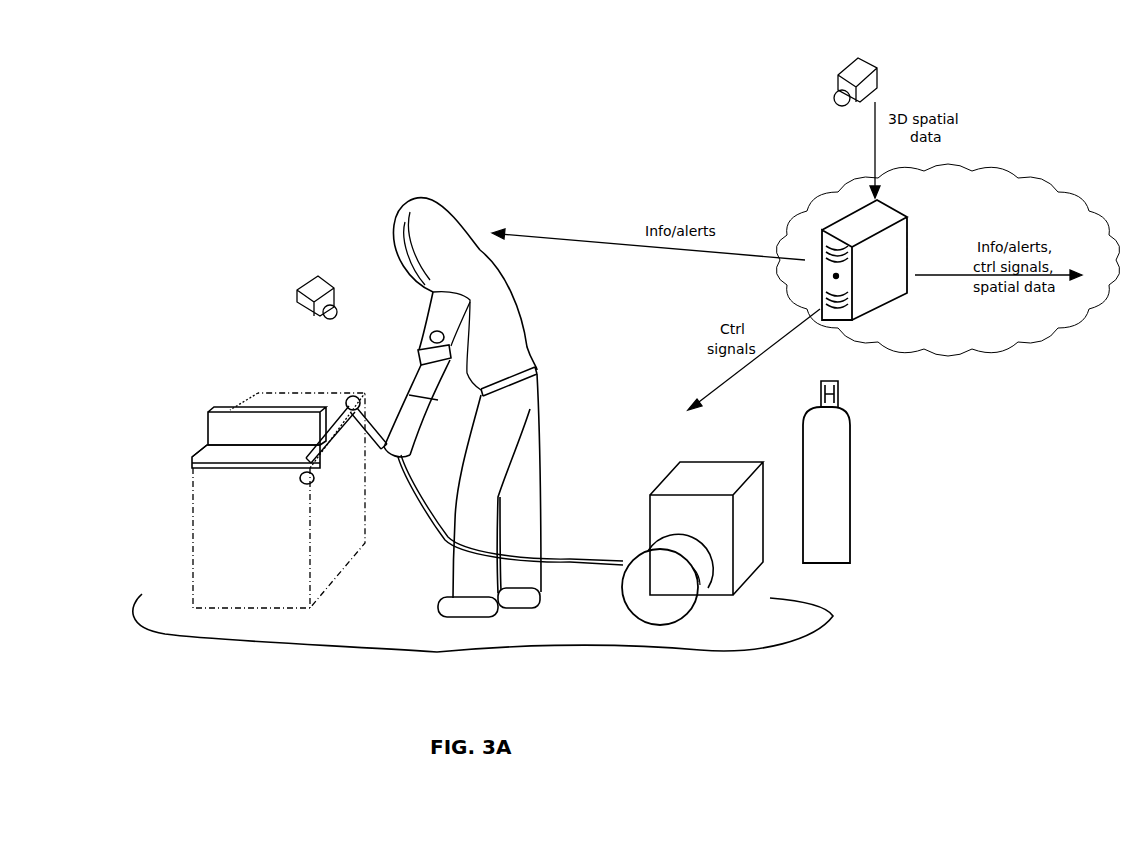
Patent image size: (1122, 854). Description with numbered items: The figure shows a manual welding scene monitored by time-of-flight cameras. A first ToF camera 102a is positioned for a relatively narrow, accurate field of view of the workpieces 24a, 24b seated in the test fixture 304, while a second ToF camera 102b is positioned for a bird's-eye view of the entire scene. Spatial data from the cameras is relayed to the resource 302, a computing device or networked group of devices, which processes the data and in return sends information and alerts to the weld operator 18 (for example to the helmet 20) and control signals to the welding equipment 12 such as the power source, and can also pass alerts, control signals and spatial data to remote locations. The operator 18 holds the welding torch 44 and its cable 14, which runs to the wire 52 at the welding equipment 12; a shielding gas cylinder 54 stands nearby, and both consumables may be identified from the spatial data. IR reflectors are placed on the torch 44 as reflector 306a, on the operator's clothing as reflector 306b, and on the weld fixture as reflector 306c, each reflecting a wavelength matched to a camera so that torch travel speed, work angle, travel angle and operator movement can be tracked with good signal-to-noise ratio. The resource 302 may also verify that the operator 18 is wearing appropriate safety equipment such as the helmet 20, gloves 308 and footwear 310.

The welding equipment 12 is at (715, 467).
The cable 14 is at (570, 556).
The weld operator 18 is at (516, 274).
The helmet 20 is at (447, 200).
The workpiece 24a is at (305, 397).
The workpiece 24b is at (258, 397).
The welding torch 44 is at (380, 420).
The wire 52 is at (690, 610).
The shielding gas cylinder 54 is at (847, 417).
The ToF camera 102a is at (293, 283).
The ToF camera 102b is at (866, 58).
The resource 302 is at (908, 260).
The test fixture 304 is at (195, 525).
The IR reflector 306a is at (356, 396).
The IR reflector 306b is at (447, 324).
The IR reflector 306c is at (304, 484).
The gloves 308 is at (410, 430).
The footwear 310 is at (483, 611).